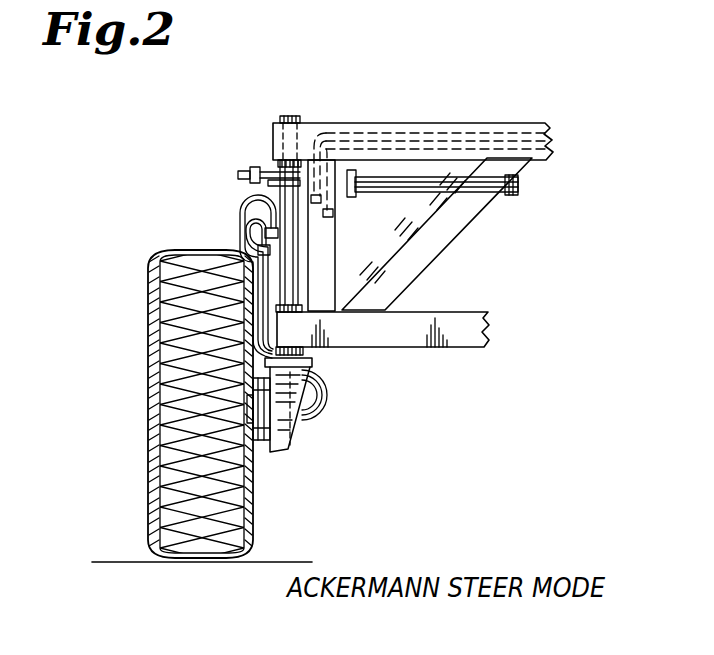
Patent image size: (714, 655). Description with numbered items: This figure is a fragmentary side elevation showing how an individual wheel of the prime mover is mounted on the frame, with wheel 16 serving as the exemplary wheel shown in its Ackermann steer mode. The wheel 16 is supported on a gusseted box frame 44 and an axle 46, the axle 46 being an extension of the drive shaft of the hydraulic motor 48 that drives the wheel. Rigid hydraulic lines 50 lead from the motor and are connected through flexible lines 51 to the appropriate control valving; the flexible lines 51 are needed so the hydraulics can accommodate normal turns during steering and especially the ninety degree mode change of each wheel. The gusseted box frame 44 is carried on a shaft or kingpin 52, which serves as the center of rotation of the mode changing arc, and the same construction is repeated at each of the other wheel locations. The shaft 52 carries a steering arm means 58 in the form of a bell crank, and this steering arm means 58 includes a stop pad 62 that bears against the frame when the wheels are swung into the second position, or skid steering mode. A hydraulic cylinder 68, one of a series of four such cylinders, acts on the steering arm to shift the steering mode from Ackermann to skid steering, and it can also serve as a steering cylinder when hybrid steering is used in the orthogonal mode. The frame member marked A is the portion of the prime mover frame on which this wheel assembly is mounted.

The drive wheel 16 is at (152, 428).
The gusseted box frame 44 is at (292, 448).
The axle 46 is at (258, 442).
The hydraulic motor 48 is at (300, 428).
The rigid hydraulic lines 50 is at (328, 385).
The flexible lines 51 is at (238, 212).
The shaft or kingpin 52 is at (285, 116).
The steering arm means 58 is at (238, 175).
The stop pad 62 is at (258, 166).
The hydraulic cylinder 68 is at (412, 198).
The frame arm A is at (445, 347).